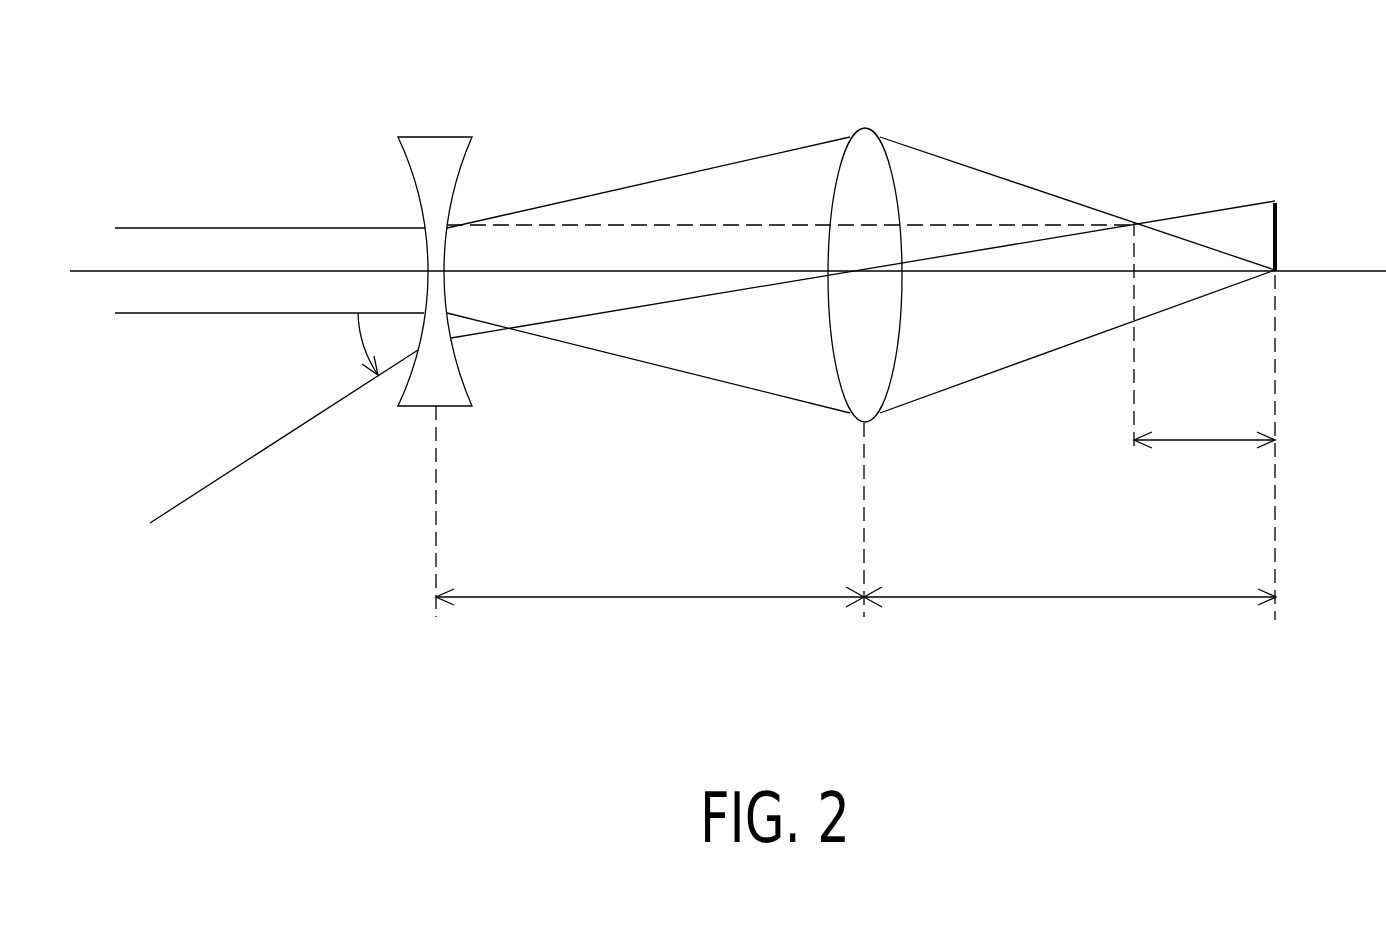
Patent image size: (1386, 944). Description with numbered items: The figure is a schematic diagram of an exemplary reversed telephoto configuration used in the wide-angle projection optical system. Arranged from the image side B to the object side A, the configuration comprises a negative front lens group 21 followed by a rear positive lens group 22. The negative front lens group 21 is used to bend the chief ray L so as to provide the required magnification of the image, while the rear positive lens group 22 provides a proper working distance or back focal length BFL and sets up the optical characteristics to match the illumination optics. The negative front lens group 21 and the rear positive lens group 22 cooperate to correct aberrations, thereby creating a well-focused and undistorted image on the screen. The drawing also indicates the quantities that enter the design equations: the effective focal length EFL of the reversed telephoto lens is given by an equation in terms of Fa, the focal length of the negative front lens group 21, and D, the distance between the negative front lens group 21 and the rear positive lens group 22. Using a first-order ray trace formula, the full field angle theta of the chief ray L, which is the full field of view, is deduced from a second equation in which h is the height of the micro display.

The negative front lens group 21 is at (602, 112).
The rear positive lens group 22 is at (1018, 112).
The chief ray L is at (247, 462).
The full field angle theta is at (346, 344).
The height of the micro display h is at (1293, 237).
The distance between the negative front lens group and the rear positive lens group D is at (659, 577).
The back focal length BFL is at (1070, 576).
The effective focal length EFL is at (1204, 419).
The focal length of the negative front lens group Fa is at (436, 114).
The object side A is at (1362, 78).
The image side B is at (138, 70).